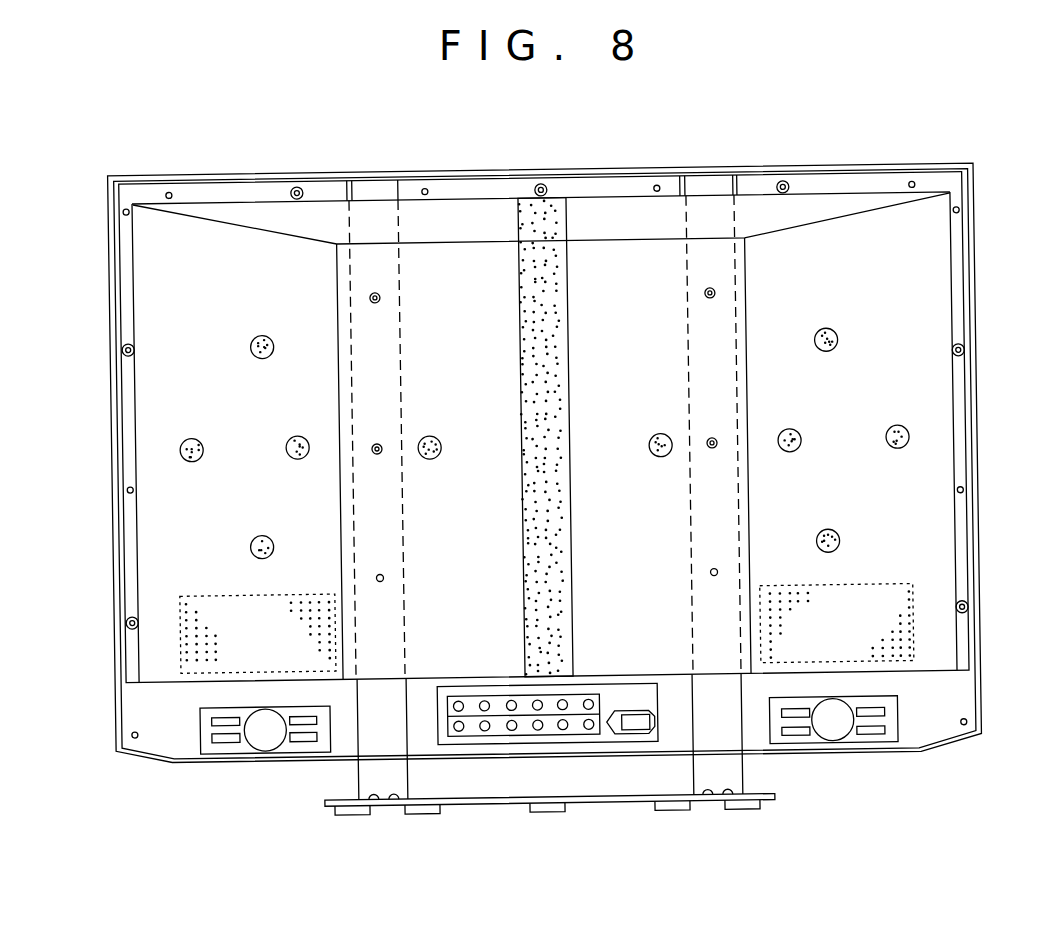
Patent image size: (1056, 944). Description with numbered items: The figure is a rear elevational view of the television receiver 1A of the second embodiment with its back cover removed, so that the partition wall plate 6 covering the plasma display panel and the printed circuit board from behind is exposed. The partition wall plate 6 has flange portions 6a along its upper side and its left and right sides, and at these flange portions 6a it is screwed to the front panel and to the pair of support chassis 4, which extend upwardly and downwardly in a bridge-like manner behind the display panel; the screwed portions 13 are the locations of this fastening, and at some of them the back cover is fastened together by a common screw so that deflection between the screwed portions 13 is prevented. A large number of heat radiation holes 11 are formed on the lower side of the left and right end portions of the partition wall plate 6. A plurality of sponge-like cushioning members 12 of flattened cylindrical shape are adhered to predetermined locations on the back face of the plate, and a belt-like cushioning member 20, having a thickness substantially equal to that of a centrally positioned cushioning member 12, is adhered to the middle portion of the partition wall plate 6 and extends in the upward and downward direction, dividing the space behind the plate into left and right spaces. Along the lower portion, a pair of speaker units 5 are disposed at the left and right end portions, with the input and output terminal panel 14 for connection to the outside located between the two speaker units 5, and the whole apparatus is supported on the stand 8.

The television receiver 1A is at (917, 146).
The support chassis 4 is at (366, 722).
The speaker unit 5 is at (258, 731).
The partition wall plate 6 is at (643, 271).
The flange portion 6a is at (459, 180).
The stand 8 is at (595, 798).
The heat radiation hole 11 is at (178, 592).
The cushioning member 12 is at (264, 331).
The screwed portion 13 is at (303, 183).
The input and output terminal panel 14 is at (498, 734).
The cushioning member 20 is at (570, 263).